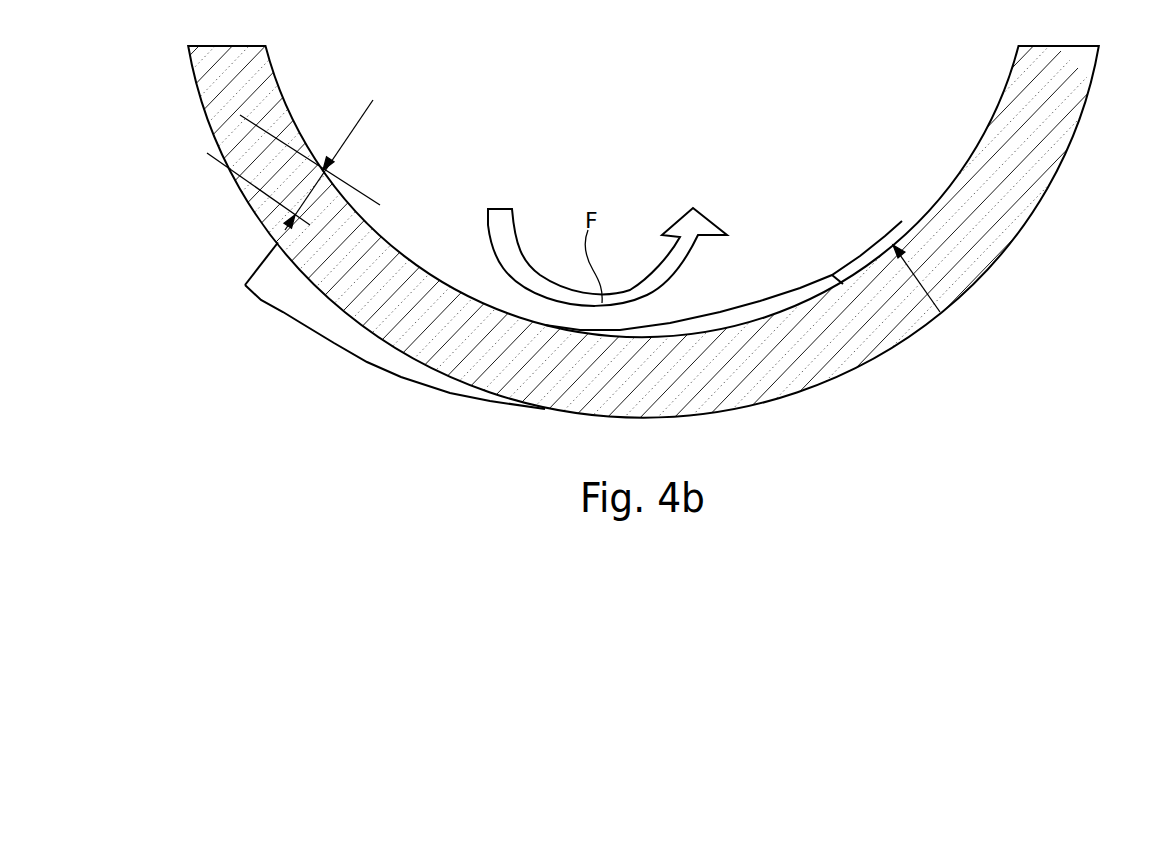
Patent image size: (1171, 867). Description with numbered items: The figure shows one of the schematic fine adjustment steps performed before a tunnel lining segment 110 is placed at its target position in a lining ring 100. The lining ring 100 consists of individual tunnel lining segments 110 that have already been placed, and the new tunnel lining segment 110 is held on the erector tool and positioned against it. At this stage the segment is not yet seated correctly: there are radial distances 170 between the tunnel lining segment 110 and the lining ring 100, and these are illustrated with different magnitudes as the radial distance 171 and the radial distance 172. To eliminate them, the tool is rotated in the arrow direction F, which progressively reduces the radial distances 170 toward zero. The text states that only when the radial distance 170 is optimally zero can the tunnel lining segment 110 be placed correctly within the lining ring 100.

The lining ring 100 is at (985, 123).
The tunnel lining segment 110 is at (393, 376).
The radial distance 170 is at (248, 261).
The radial distance 171 is at (893, 245).
The radial distance 172 is at (312, 190).